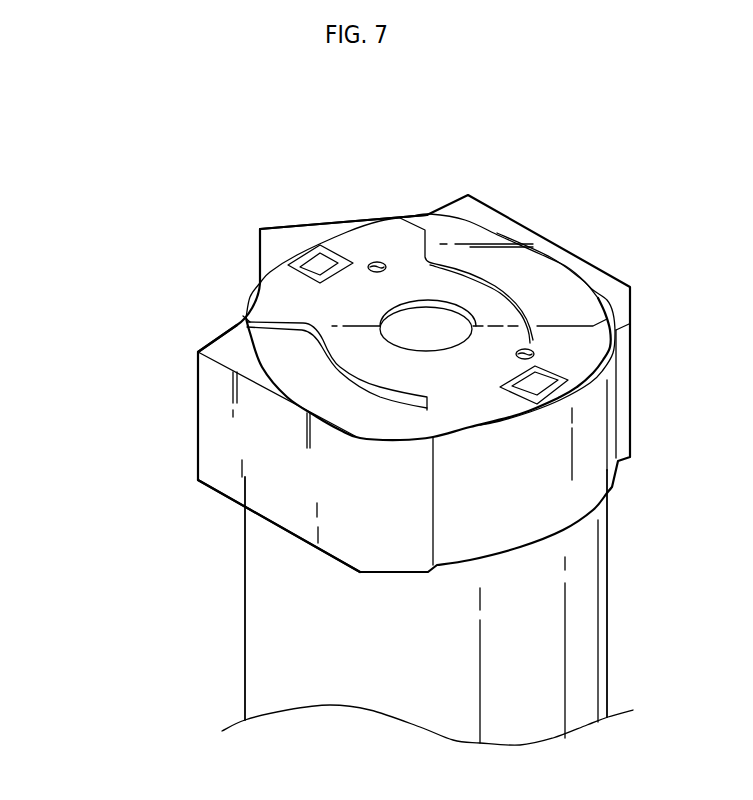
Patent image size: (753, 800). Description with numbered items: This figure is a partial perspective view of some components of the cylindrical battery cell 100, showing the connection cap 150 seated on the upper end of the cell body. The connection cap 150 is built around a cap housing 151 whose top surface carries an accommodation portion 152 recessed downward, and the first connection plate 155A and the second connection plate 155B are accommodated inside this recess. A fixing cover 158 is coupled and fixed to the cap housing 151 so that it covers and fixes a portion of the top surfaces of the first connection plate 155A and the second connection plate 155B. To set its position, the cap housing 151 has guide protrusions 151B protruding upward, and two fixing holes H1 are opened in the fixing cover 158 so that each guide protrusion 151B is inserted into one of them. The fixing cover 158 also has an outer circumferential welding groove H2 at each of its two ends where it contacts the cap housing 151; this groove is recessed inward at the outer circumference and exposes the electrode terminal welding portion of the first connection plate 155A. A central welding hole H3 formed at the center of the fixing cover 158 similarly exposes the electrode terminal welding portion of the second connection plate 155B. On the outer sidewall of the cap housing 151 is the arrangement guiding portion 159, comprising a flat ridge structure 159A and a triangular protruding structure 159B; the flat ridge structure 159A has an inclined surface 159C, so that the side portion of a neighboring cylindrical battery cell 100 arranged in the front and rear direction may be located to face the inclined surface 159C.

The cylindrical battery cell 100 is at (237, 130).
The connection cap 150 is at (441, 147).
The cap housing 151 is at (242, 281).
The guide protrusion 151B is at (377, 262).
The accommodation portion 152 is at (280, 353).
The first connection plate 155A is at (293, 372).
The second connection plate 155B is at (518, 267).
The fixing cover 158 is at (283, 288).
The arrangement guiding portion 159 is at (93, 203).
The flat ridge structure 159A is at (207, 367).
The triangular protruding structure 159B is at (260, 229).
The inclined surface 159C is at (383, 522).
The fixing hole H1 is at (377, 263).
The outer circumferential welding groove H2 is at (333, 268).
The central welding hole H3 is at (413, 329).